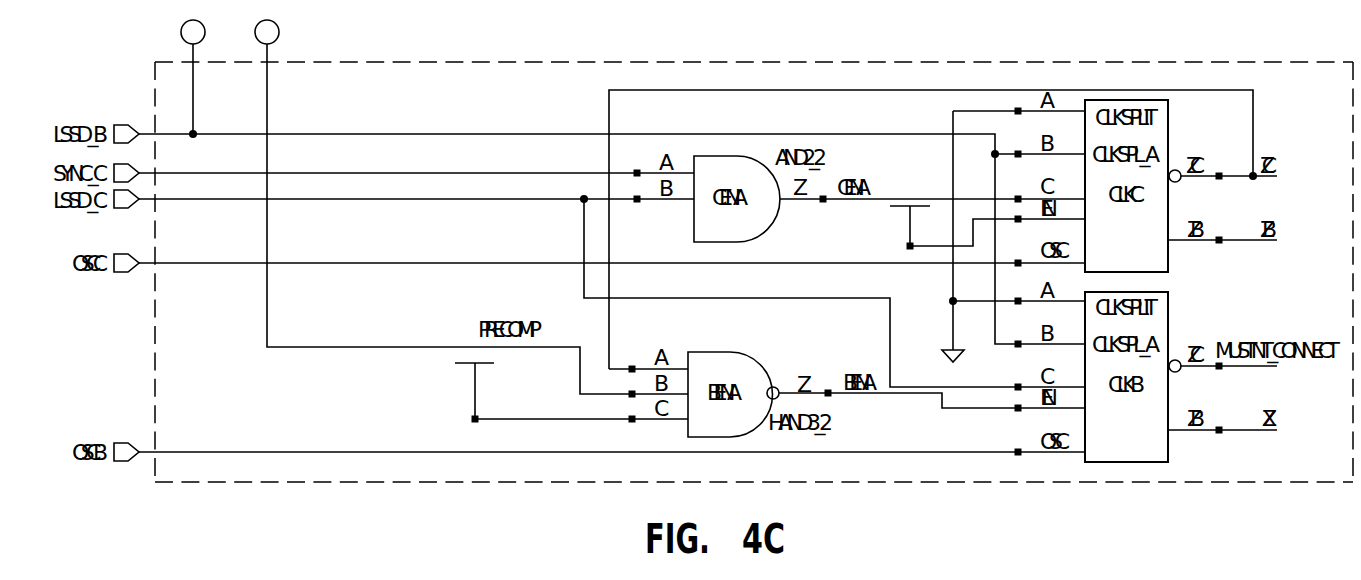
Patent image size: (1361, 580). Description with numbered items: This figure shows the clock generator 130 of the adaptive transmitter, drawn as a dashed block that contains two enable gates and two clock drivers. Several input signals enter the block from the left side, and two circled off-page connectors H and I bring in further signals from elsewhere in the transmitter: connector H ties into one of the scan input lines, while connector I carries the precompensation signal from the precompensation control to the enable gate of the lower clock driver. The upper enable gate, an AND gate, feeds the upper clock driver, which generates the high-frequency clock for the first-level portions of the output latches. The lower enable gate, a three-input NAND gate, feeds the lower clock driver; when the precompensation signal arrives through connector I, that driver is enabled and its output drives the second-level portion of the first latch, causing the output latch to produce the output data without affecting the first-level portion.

The clock generator 130 is at (770, 62).
The off-page connector H (LSSD_B) H is at (193, 79).
The off-page connector I (PRECOMP) I is at (471, 207).